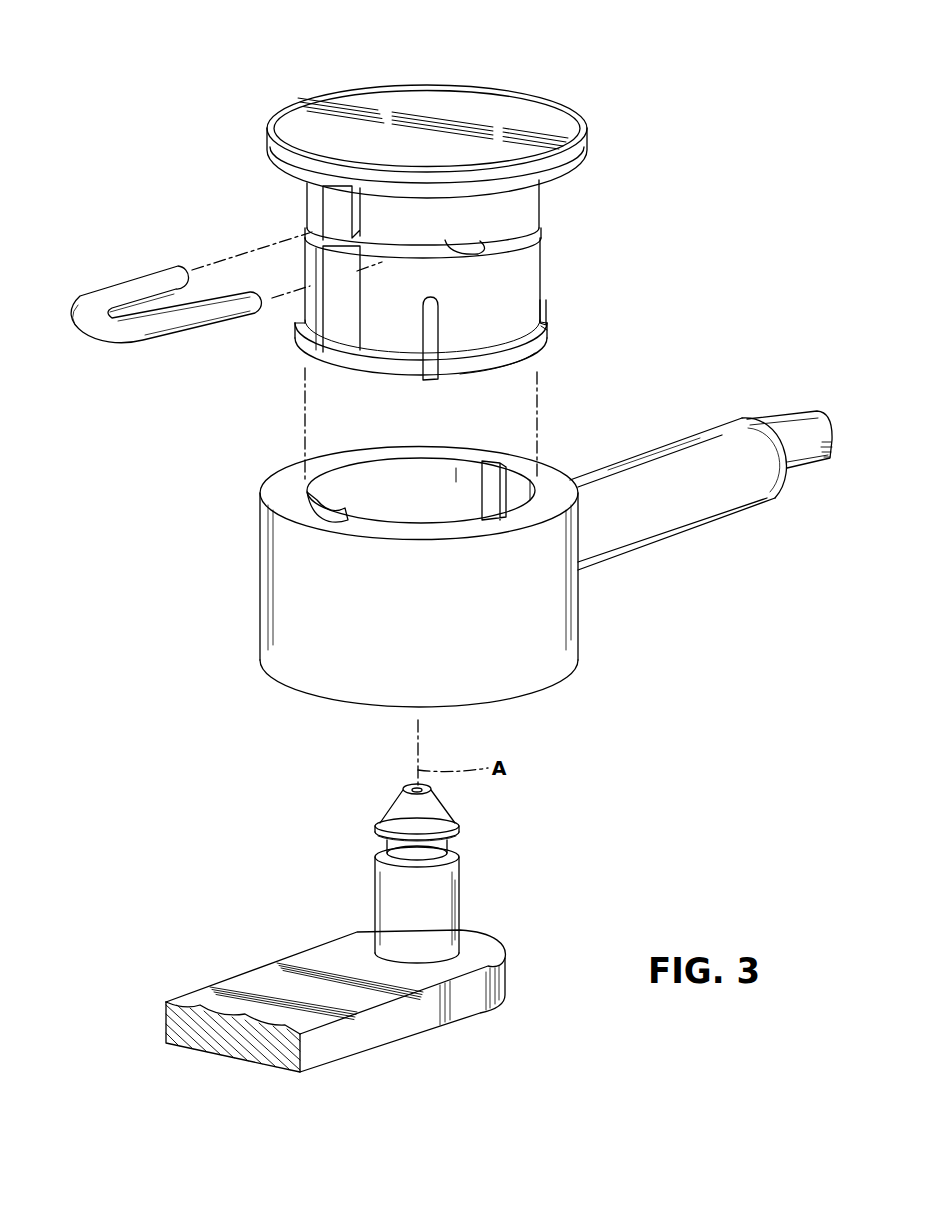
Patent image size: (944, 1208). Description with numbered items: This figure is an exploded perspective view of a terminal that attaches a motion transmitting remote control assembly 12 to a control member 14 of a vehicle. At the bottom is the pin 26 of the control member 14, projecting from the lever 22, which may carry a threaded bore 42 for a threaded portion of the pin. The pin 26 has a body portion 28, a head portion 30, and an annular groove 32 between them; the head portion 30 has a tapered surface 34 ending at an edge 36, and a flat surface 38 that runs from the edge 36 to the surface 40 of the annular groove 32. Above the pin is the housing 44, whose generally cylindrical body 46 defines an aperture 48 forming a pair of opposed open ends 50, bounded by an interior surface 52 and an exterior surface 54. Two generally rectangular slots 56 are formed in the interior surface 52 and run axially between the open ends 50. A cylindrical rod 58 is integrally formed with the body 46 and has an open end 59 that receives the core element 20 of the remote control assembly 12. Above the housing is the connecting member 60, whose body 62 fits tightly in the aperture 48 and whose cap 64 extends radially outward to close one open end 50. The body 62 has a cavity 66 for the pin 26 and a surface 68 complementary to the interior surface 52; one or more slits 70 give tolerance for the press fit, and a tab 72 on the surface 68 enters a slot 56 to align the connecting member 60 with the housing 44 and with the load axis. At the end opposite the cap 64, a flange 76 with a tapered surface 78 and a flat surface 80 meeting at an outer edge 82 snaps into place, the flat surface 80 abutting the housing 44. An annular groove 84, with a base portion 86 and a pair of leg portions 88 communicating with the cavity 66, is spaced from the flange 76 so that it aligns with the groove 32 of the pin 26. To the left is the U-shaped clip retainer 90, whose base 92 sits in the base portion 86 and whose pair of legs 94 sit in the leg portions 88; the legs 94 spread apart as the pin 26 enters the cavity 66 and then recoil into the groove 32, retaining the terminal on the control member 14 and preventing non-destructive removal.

The motion transmitting remote control assembly 12 is at (829, 458).
The control member 14 is at (368, 1013).
The core element 20 is at (802, 435).
The lever 22 is at (351, 1042).
The pin 26 is at (423, 857).
The body portion 28 is at (462, 923).
The head portion 30 is at (433, 787).
The annular groove 32 is at (452, 848).
The tapered surface 34 is at (402, 808).
The edge 36 is at (372, 822).
The flat surface 38 is at (462, 823).
The surface of the annular groove 40 is at (382, 847).
The threaded bore 42 is at (503, 957).
The housing 44 is at (431, 576).
The cylindrical body 46 is at (290, 624).
The aperture 48 is at (458, 478).
The open end 50 is at (347, 470).
The interior surface 52 is at (421, 490).
The exterior surface 54 is at (422, 612).
The slot 56 is at (498, 468).
The rod 58 is at (701, 512).
The open end of rod 59 is at (787, 487).
The connecting member 60 is at (520, 96).
The body of connecting member 62 is at (447, 295).
The cap 64 is at (406, 96).
The cavity 66 is at (544, 234).
The surface of connecting member body 68 is at (487, 310).
The slit 70 is at (550, 325).
The tab 72 is at (316, 356).
The flange 76 is at (343, 336).
The tapered surface of flange 78 is at (532, 352).
The flat surface of flange 80 is at (550, 334).
The outer edge 82 is at (543, 318).
The groove 84 is at (528, 226).
The base portion 86 is at (320, 214).
The leg portion 88 is at (421, 312).
The retainer 90 is at (157, 296).
The base 92 is at (107, 330).
The leg 94 is at (162, 283).